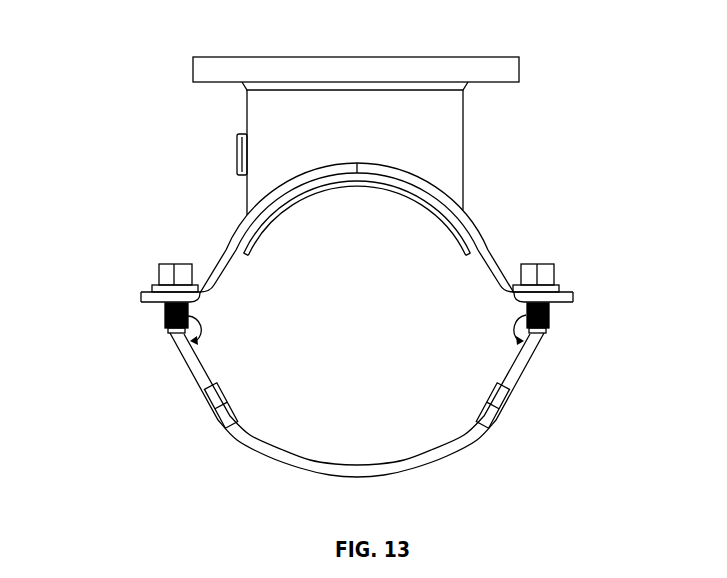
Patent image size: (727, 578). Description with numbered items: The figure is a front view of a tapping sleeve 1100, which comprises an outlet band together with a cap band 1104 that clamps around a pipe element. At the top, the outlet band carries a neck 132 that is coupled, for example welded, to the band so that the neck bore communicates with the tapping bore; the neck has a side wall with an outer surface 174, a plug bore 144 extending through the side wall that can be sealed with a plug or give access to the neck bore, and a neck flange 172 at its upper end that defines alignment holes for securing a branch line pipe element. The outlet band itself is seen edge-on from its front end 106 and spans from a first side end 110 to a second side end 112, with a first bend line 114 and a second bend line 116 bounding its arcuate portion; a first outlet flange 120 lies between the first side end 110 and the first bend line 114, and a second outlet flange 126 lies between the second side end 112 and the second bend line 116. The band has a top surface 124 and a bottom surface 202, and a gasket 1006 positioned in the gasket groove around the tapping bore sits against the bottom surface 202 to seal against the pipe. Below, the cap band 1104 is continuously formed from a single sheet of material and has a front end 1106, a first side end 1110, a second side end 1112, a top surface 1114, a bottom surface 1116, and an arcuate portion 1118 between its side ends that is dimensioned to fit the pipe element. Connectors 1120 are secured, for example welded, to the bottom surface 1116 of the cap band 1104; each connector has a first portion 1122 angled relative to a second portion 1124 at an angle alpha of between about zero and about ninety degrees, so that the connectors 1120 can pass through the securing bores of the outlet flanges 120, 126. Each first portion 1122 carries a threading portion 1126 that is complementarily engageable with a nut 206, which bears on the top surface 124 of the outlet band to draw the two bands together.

The tapping sleeve 1100 is at (126, 29).
The neck flange 172 is at (253, 61).
The neck 132 is at (330, 92).
The outer surface 174 is at (450, 117).
The plug bore 144 is at (236, 152).
The front end 106 is at (357, 218).
The first side end 110 is at (150, 300).
The second side end 112 is at (577, 293).
The first bend line 114 is at (218, 284).
The second bend line 116 is at (497, 289).
The top surface 124 is at (249, 198).
The second outlet flange 126 is at (570, 305).
The gasket 1006 is at (275, 230).
The bottom surface 202 is at (477, 269).
The first outlet flange 120 is at (142, 288).
The nut 206 is at (187, 270).
The threading portion 1126 is at (163, 316).
The first portion 1122 is at (163, 325).
The second portion 1124 is at (532, 357).
The connectors 1120 is at (363, 331).
The cap band 1104 is at (357, 419).
The first side end 1110 is at (223, 380).
The second side end 1112 is at (502, 383).
The top surface 1114 is at (259, 408).
The bottom surface 1116 is at (239, 436).
The arcuate portion 1118 is at (297, 460).
The front end 1106 is at (437, 448).